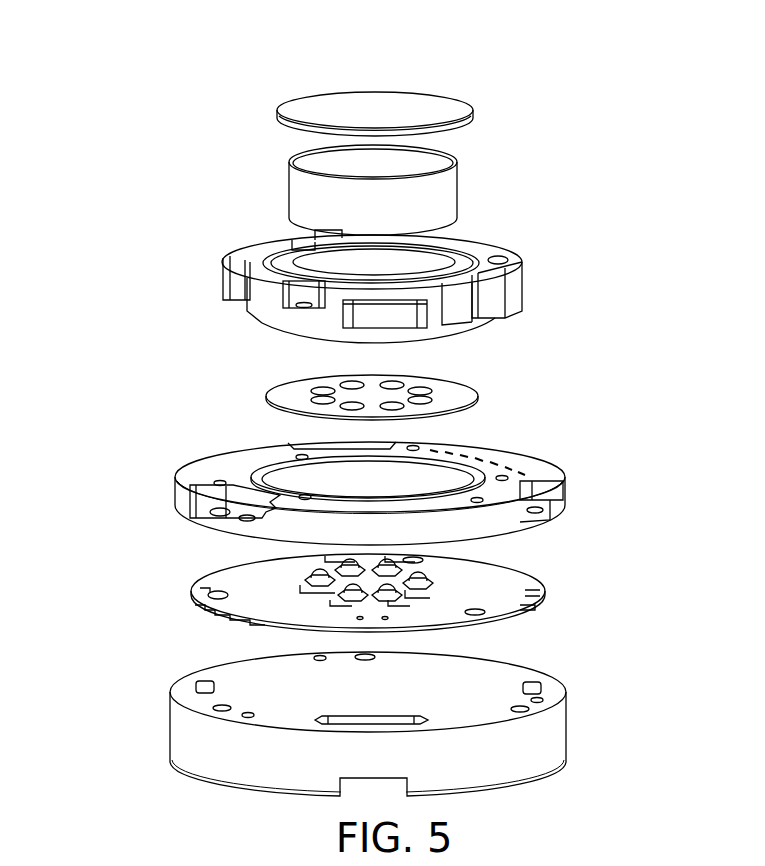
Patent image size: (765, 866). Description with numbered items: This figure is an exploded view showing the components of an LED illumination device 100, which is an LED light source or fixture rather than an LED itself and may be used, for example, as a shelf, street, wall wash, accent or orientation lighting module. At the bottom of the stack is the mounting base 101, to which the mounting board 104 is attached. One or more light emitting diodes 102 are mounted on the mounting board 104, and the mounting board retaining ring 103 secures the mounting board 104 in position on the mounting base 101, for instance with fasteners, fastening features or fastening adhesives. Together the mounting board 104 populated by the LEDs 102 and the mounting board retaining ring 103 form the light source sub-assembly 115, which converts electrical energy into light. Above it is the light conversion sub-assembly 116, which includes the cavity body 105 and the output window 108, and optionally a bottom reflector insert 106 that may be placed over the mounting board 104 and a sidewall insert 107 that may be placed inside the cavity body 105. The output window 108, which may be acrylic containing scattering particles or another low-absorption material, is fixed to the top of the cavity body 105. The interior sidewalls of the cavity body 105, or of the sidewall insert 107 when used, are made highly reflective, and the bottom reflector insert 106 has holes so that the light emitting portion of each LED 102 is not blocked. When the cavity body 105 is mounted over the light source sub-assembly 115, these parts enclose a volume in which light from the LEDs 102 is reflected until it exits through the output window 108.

The LED illumination device 100 is at (548, 58).
The mounting base 101 is at (563, 724).
The light emitting diodes 102 is at (317, 586).
The mounting board retaining ring 103 is at (563, 477).
The mounting board 104 is at (545, 597).
The cavity body 105 is at (520, 288).
The bottom reflector insert 106 is at (463, 392).
The sidewall insert 107 is at (450, 191).
The output window 108 is at (380, 95).
The light source sub-assembly 115 is at (133, 435).
The light conversion sub-assembly 116 is at (230, 52).